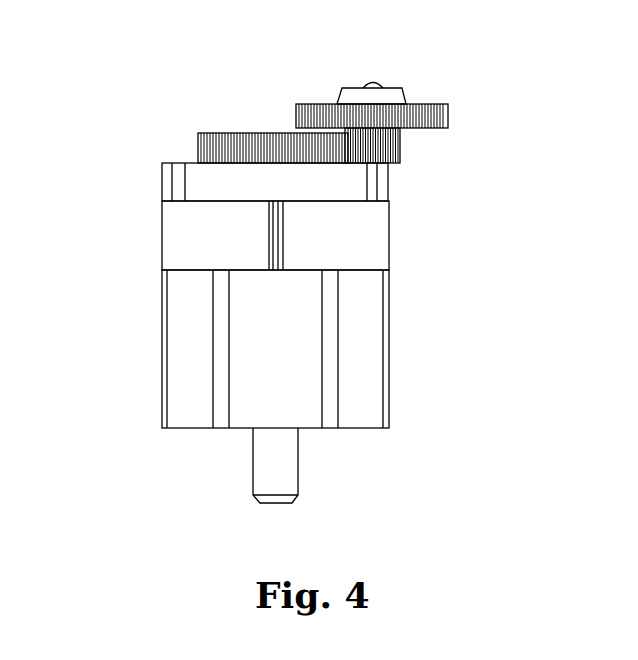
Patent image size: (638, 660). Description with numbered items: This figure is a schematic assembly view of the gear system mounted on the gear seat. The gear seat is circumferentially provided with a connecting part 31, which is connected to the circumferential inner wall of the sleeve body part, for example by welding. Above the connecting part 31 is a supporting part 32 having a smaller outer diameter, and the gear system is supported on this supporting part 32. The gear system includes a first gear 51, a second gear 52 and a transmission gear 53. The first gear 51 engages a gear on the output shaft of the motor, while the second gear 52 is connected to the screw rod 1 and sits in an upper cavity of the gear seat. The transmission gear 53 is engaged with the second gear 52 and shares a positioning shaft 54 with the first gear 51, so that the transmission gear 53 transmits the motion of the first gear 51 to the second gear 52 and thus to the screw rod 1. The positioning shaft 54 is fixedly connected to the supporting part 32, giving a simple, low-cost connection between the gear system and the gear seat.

The screw rod 1 is at (278, 458).
The connecting part 31 is at (360, 243).
The supporting part 32 is at (347, 185).
The first gear 51 is at (449, 110).
The second gear 52 is at (217, 143).
The transmission gear 53 is at (400, 147).
The positioning shaft 54 is at (375, 82).